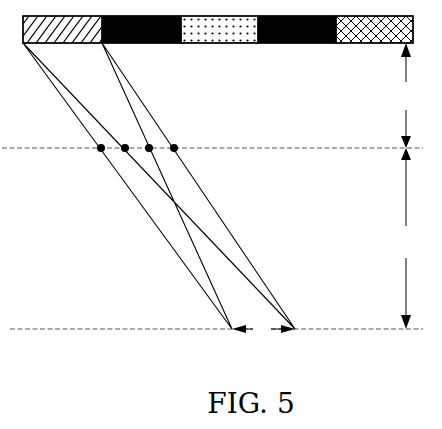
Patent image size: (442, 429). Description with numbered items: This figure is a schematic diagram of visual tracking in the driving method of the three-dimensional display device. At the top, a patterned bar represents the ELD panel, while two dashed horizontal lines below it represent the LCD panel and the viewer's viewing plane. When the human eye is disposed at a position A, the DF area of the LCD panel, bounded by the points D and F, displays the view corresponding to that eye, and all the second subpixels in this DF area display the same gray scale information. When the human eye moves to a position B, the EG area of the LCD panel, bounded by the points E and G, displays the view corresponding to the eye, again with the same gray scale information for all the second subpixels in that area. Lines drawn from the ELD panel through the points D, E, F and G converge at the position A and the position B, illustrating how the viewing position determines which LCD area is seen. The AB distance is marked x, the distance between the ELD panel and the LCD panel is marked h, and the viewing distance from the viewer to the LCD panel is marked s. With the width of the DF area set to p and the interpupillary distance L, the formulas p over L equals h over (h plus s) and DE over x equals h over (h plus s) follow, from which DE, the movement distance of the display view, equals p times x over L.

The position A is at (235, 342).
The position B is at (293, 342).
The point D is at (92, 161).
The point E is at (125, 161).
The point F is at (148, 161).
The point G is at (183, 161).
The distance between the ELD panel and the LCD panel h is at (406, 95).
The viewing distance s is at (406, 238).
The AB distance x is at (263, 329).